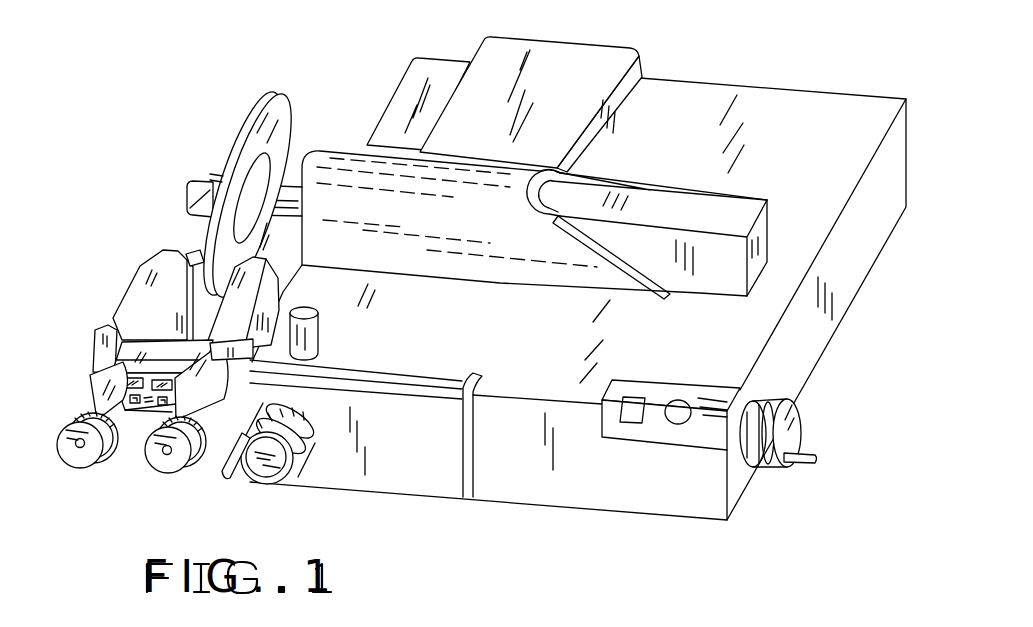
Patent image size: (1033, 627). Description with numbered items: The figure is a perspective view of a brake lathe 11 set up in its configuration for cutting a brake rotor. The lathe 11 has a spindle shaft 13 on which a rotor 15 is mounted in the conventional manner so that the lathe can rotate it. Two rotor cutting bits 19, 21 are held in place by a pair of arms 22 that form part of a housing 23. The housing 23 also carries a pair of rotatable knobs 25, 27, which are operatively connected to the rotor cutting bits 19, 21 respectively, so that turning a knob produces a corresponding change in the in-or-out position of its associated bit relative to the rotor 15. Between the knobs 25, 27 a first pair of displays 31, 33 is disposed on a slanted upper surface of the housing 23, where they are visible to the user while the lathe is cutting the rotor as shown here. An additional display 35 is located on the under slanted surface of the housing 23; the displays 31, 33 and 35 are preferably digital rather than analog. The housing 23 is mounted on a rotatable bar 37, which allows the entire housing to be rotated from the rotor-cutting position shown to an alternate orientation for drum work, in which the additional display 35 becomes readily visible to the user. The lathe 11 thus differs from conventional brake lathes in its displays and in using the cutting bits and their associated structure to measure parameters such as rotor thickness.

The brake lathe 11 is at (697, 62).
The spindle shaft 13 is at (288, 192).
The rotor 15 is at (257, 110).
The rotor cutting bit 19 is at (191, 181).
The rotor cutting bit 21 is at (192, 255).
The arms 22 is at (166, 303).
The housing 23 is at (120, 398).
The rotatable knob 25 is at (176, 467).
The rotatable knob 27 is at (73, 449).
The display 31 is at (158, 367).
The display 33 is at (128, 375).
The additional display 35 is at (127, 438).
The rotatable bar 37 is at (233, 433).